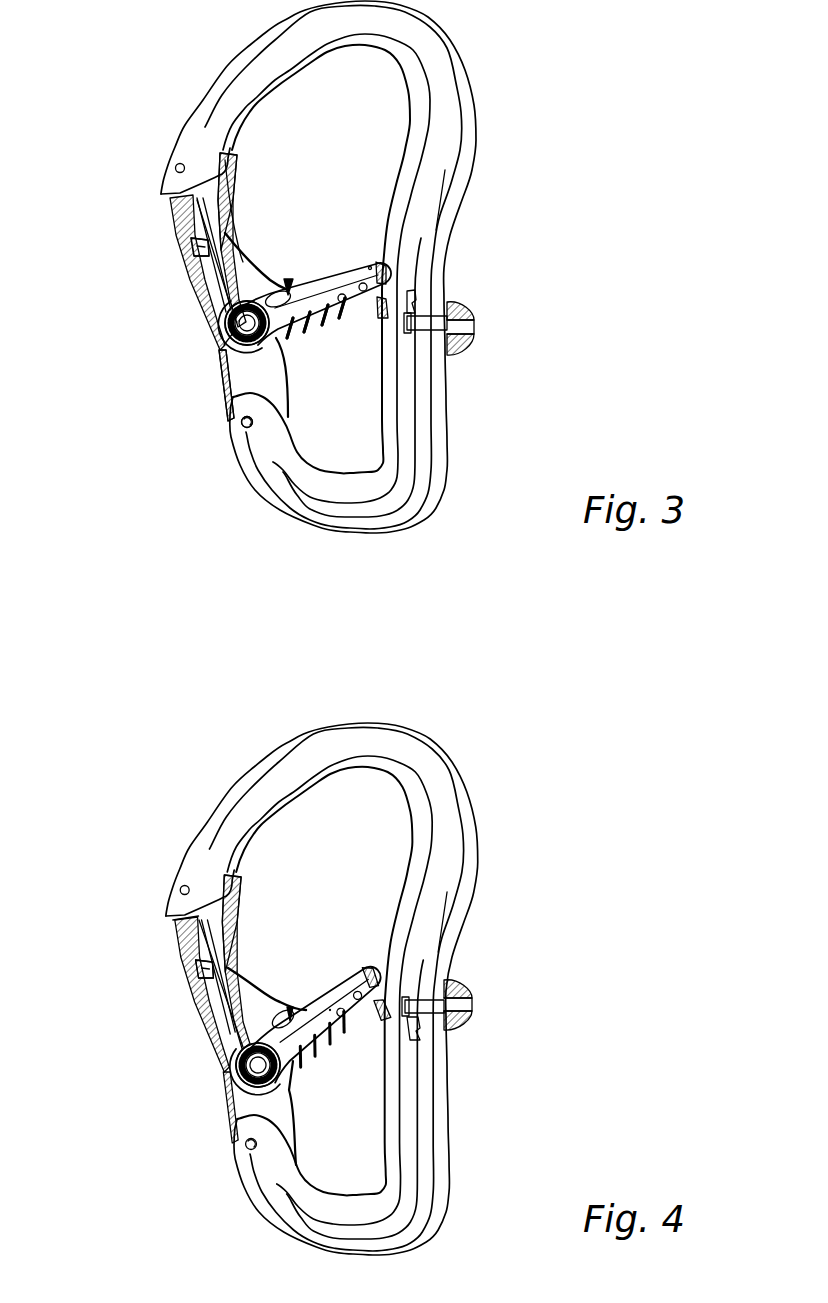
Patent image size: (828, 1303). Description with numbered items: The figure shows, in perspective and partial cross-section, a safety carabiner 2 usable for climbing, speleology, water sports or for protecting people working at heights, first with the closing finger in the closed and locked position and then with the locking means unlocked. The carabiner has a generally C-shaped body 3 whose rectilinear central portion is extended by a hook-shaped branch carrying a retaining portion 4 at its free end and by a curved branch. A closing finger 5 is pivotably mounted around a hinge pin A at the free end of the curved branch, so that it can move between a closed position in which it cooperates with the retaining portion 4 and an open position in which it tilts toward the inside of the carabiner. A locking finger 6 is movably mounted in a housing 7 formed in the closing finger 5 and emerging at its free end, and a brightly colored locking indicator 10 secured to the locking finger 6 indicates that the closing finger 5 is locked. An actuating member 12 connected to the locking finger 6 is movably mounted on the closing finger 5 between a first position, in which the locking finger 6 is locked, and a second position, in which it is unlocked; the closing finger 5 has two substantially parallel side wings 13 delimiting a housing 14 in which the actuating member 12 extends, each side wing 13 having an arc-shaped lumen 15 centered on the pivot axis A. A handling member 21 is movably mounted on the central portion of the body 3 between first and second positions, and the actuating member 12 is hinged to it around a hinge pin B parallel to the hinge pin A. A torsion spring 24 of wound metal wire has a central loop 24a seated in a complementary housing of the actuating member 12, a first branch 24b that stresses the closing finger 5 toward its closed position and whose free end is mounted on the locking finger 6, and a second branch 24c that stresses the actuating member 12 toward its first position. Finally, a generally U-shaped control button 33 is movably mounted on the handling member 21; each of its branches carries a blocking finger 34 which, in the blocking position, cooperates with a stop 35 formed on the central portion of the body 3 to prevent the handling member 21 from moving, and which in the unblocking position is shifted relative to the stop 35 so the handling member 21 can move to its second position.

In FIG. 3, the safety carabiner 2 is at (553, 145).
In FIG. 4, the safety carabiner 2 is at (538, 877).
In FIG. 3, the body 3 is at (465, 110).
In FIG. 4, the body 3 is at (322, 989).
In FIG. 3, the retaining portion 4 is at (177, 137).
In FIG. 3, the closing finger 5 is at (173, 225).
In FIG. 4, the closing finger 5 is at (216, 1012).
In FIG. 3, the locking finger 6 is at (205, 200).
In FIG. 4, the locking finger 6 is at (231, 923).
In FIG. 4, the housing 7 is at (186, 918).
In FIG. 3, the locking indicator 10 is at (190, 248).
In FIG. 4, the locking indicator 10 is at (205, 969).
In FIG. 3, the actuating member 12 is at (300, 363).
In FIG. 4, the actuating member 12 is at (350, 1027).
In FIG. 3, the side wings 13 is at (243, 267).
In FIG. 3, the housing 14 is at (220, 397).
In FIG. 3, the lumen 15 is at (288, 276).
In FIG. 4, the lumen 15 is at (290, 1007).
In FIG. 3, the handling member 21 is at (467, 307).
In FIG. 4, the handling member 21 is at (457, 978).
In FIG. 3, the torsion spring 24 is at (220, 347).
In FIG. 4, the torsion spring 24 is at (223, 1080).
In FIG. 3, the central loop 24a is at (217, 313).
In FIG. 3, the first branch 24b is at (193, 277).
In FIG. 4, the first branch 24b is at (225, 1020).
In FIG. 3, the second branch 24c is at (307, 337).
In FIG. 4, the second branch 24c is at (327, 1003).
In FIG. 3, the control button 33 is at (468, 328).
In FIG. 4, the control button 33 is at (460, 998).
In FIG. 3, the blocking finger 34 is at (408, 330).
In FIG. 4, the blocking finger 34 is at (407, 1012).
In FIG. 3, the stop 35 is at (417, 305).
In FIG. 4, the stop 35 is at (421, 1041).
In FIG. 3, the hinge pin A is at (233, 427).
In FIG. 3, the hinge pin B is at (370, 267).